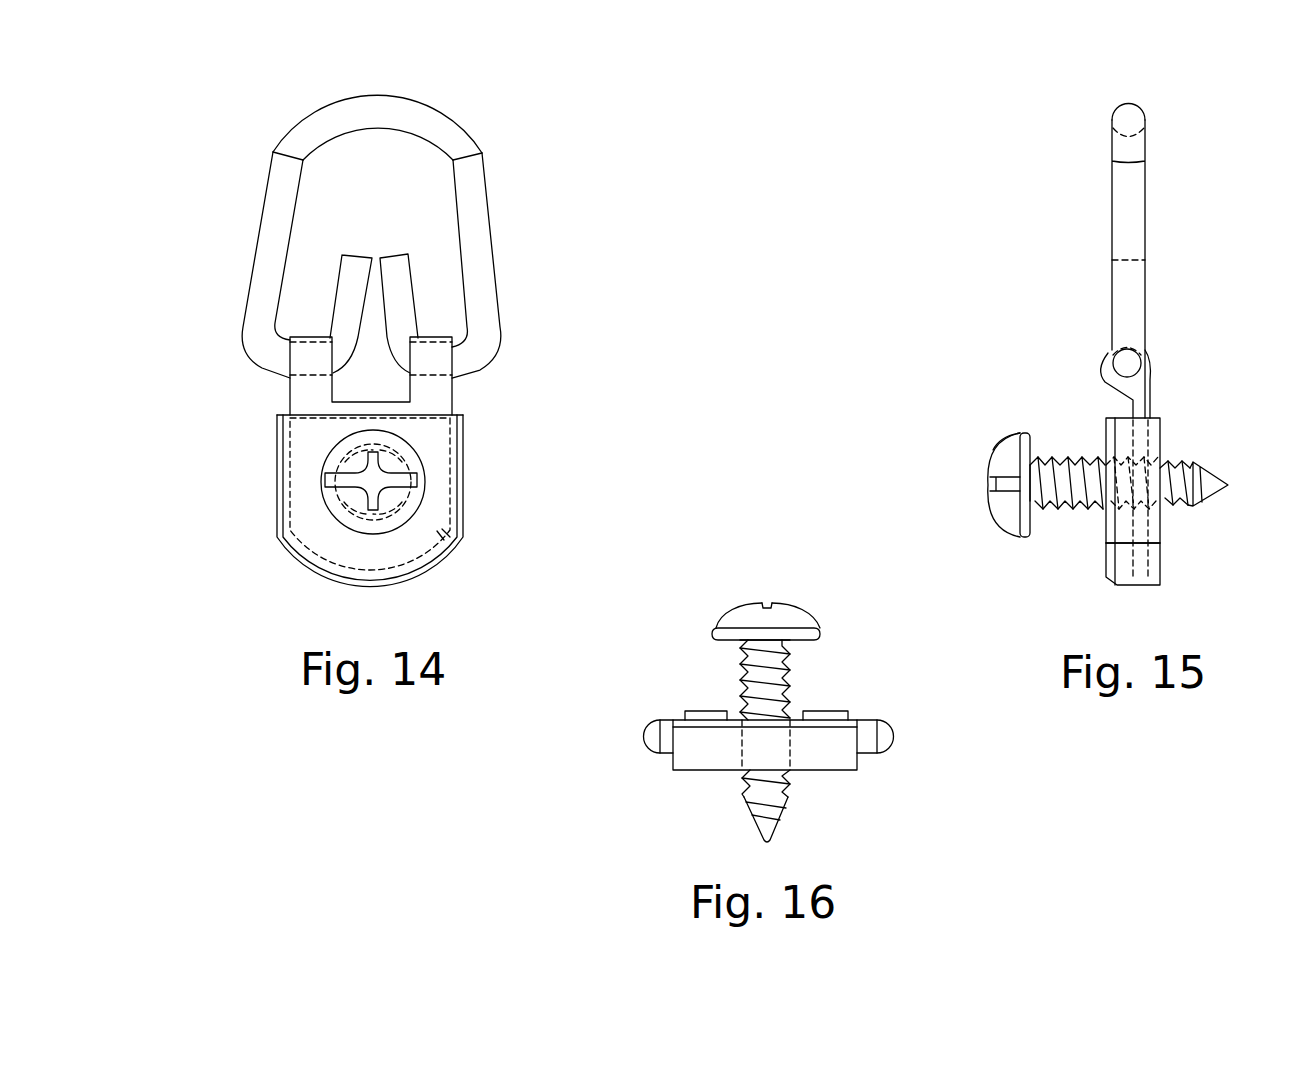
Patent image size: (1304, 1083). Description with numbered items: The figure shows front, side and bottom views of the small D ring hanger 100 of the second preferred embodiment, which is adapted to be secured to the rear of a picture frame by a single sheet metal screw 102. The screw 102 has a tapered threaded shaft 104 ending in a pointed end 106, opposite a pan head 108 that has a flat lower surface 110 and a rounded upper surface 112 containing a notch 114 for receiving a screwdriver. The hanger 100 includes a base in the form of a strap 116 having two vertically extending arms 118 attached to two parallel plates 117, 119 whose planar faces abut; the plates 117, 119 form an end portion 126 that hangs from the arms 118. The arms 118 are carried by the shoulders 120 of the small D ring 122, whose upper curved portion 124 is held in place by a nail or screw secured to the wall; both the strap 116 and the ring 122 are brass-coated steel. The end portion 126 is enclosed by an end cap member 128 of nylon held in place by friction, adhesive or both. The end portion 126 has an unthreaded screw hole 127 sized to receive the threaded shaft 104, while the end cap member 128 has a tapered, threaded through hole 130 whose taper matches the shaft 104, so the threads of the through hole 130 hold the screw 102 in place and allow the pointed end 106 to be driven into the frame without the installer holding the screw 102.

In FIG. 14, the small D ring hanger 100 is at (530, 252).
In FIG. 15, the small D ring hanger 100 is at (1092, 268).
In FIG. 16, the small D ring hanger 100 is at (887, 678).
In FIG. 14, the sheet metal screw 102 is at (327, 480).
In FIG. 15, the sheet metal screw 102 is at (1056, 585).
In FIG. 16, the sheet metal screw 102 is at (722, 620).
In FIG. 15, the tapered threaded shaft 104 is at (1085, 465).
In FIG. 16, the tapered threaded shaft 104 is at (740, 668).
In FIG. 15, the pointed end 106 is at (1205, 490).
In FIG. 16, the pointed end 106 is at (767, 813).
In FIG. 14, the pan head 108 is at (397, 497).
In FIG. 15, the pan head 108 is at (1008, 525).
In FIG. 16, the pan head 108 is at (795, 618).
In FIG. 15, the flat lower surface 110 is at (1032, 432).
In FIG. 16, the flat lower surface 110 is at (812, 650).
In FIG. 15, the rounded upper surface 112 is at (1010, 445).
In FIG. 16, the rounded upper surface 112 is at (740, 605).
In FIG. 14, the notch 114 is at (422, 480).
In FIG. 15, the notch 114 is at (995, 483).
In FIG. 16, the notch 114 is at (765, 605).
In FIG. 14, the strap 116 is at (458, 395).
In FIG. 15, the strap 116 is at (1145, 380).
In FIG. 15, the plate 117 is at (1160, 447).
In FIG. 14, the arms 118 is at (303, 389).
In FIG. 15, the arms 118 is at (1148, 357).
In FIG. 14, the plate 119 is at (305, 432).
In FIG. 15, the plate 119 is at (1130, 440).
In FIG. 14, the shoulders 120 is at (453, 337).
In FIG. 16, the shoulders 120 is at (880, 750).
In FIG. 14, the small D ring 122 is at (265, 272).
In FIG. 15, the small D ring 122 is at (1135, 297).
In FIG. 16, the small D ring 122 is at (878, 722).
In FIG. 14, the upper curved portion 124 is at (313, 130).
In FIG. 15, the upper curved portion 124 is at (1118, 113).
In FIG. 14, the end portion 126 is at (435, 537).
In FIG. 15, the end portion 126 is at (1150, 430).
In FIG. 14, the screw hole 127 is at (398, 455).
In FIG. 15, the screw hole 127 is at (1155, 512).
In FIG. 14, the end cap member 128 is at (278, 528).
In FIG. 15, the end cap member 128 is at (1155, 575).
In FIG. 16, the through hole 130 is at (793, 752).